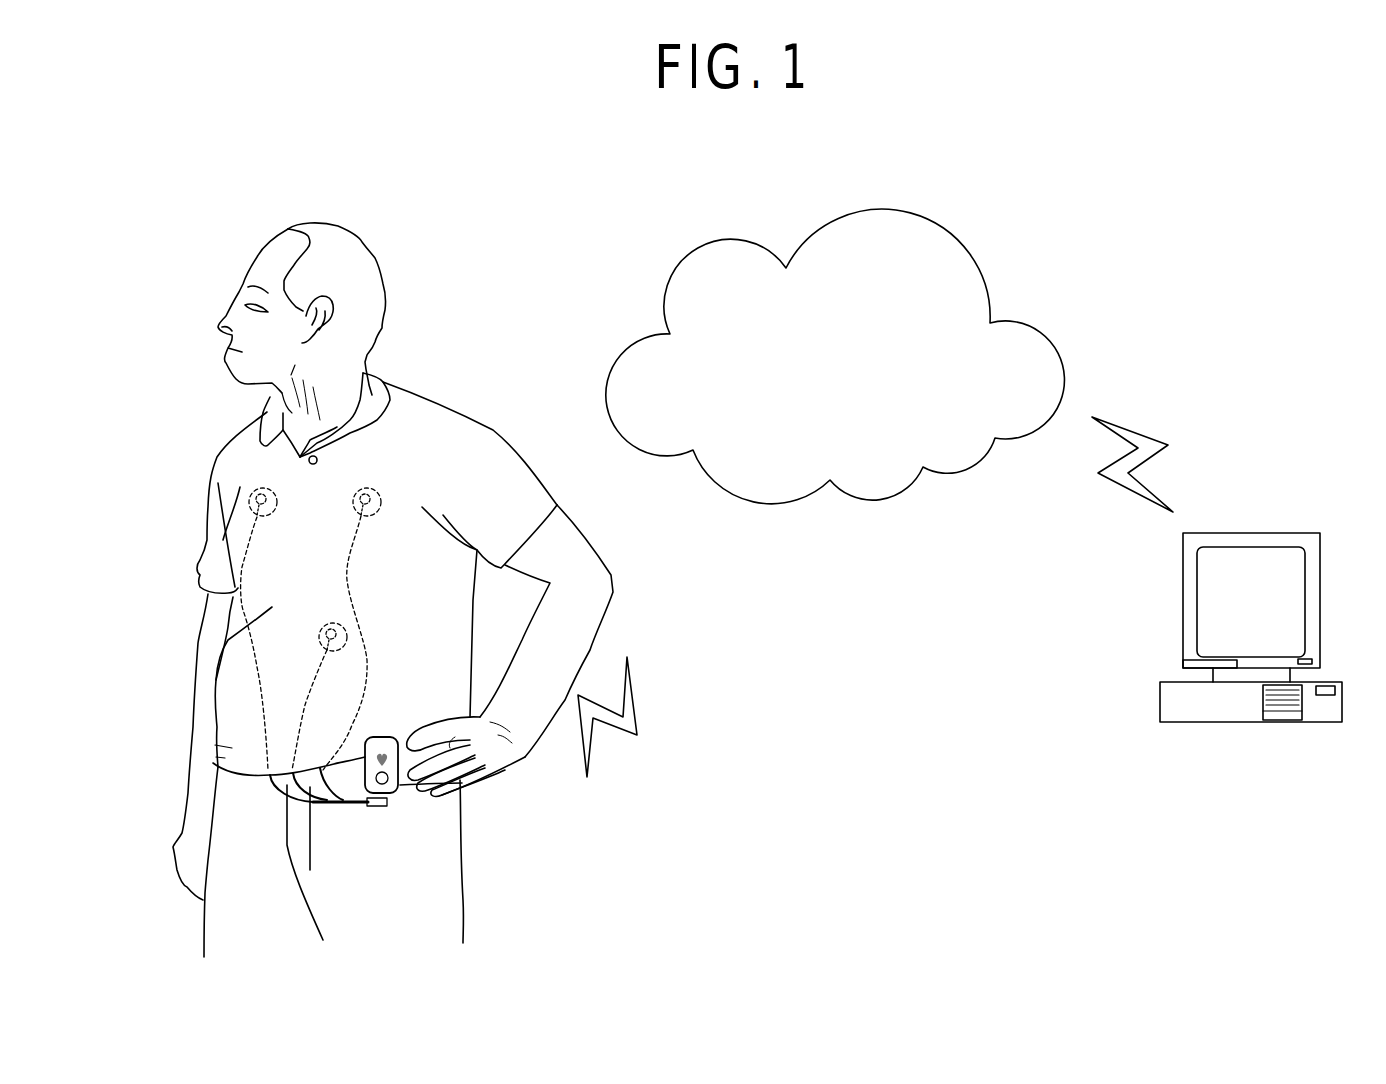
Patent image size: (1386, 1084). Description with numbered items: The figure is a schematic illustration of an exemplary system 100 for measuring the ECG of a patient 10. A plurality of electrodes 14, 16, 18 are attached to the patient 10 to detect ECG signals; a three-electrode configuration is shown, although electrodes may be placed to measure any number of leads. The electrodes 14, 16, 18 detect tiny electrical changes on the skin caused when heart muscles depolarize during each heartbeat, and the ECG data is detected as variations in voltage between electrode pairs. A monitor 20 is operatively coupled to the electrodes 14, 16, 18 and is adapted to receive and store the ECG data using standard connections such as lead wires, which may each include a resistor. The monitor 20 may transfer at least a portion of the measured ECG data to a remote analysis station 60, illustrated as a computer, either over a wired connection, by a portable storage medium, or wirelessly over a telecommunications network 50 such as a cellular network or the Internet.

The system 100 is at (237, 178).
The patient 10 is at (444, 377).
The electrode 14 is at (278, 508).
The electrode 16 is at (380, 492).
The electrode 18 is at (345, 635).
The monitor 20 is at (400, 793).
The telecommunications network 50 is at (988, 277).
The remote analysis station 60 is at (1160, 703).